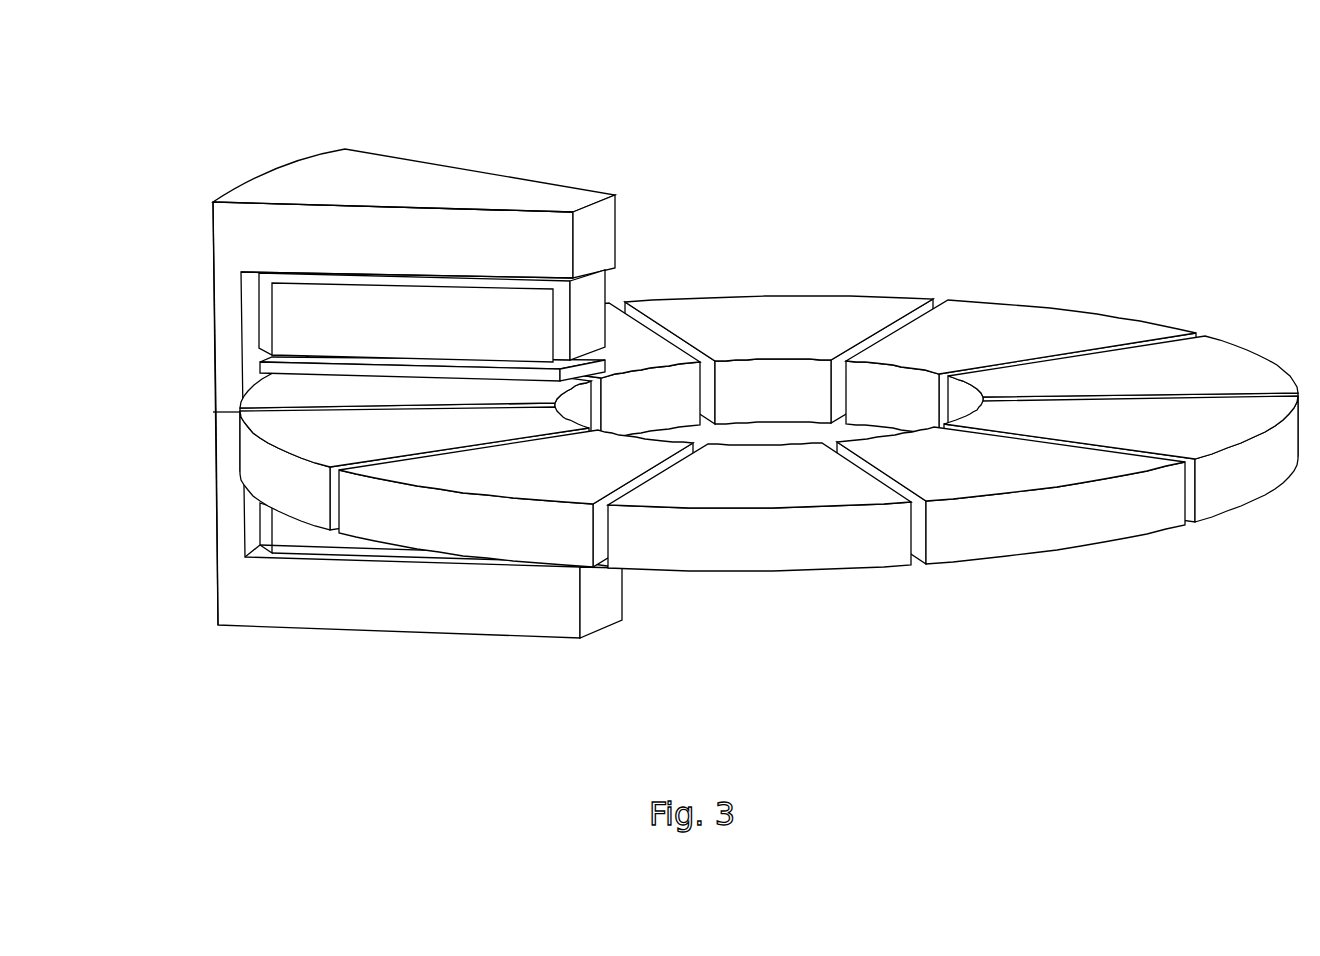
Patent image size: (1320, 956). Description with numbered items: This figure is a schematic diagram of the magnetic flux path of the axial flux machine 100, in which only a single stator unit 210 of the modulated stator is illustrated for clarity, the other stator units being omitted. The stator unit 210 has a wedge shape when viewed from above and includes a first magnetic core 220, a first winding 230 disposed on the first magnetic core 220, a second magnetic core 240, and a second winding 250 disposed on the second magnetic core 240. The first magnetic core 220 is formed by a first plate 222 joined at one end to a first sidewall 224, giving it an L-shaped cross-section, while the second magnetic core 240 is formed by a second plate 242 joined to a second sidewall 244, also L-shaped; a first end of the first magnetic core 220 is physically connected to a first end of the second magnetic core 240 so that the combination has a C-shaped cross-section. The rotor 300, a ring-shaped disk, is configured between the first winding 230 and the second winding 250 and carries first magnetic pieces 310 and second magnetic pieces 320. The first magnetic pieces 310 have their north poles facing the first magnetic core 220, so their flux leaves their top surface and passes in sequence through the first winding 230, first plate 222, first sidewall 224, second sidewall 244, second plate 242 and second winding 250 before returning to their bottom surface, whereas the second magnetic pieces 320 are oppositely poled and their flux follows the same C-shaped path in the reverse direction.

The testing apparatus 100 is at (98, 61).
The stator unit 210 is at (326, 377).
The first magnetic core 220 is at (322, 280).
The first plate 222 is at (263, 242).
The first sidewall 224 is at (230, 304).
The first winding 230 is at (470, 303).
The second magnetic core 240 is at (326, 525).
The second plate 242 is at (268, 585).
The second sidewall 244 is at (232, 520).
The second winding 250 is at (332, 538).
The rotor 300 is at (769, 356).
The first magnetic piece 310 is at (645, 345).
The second magnetic piece 320 is at (733, 325).